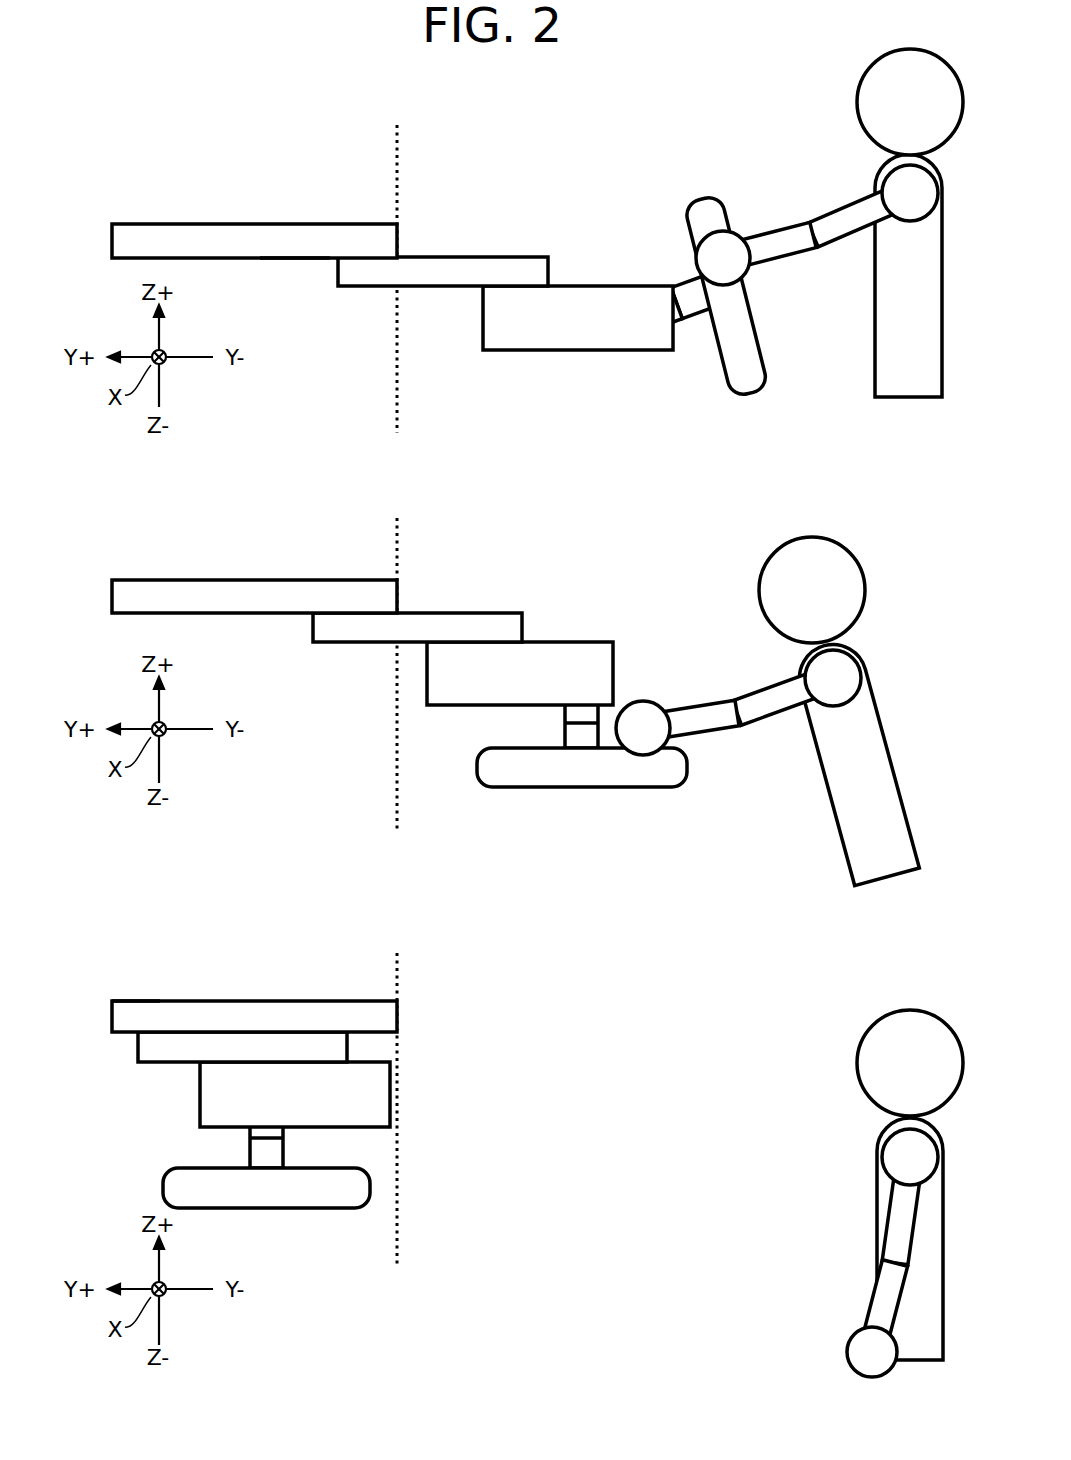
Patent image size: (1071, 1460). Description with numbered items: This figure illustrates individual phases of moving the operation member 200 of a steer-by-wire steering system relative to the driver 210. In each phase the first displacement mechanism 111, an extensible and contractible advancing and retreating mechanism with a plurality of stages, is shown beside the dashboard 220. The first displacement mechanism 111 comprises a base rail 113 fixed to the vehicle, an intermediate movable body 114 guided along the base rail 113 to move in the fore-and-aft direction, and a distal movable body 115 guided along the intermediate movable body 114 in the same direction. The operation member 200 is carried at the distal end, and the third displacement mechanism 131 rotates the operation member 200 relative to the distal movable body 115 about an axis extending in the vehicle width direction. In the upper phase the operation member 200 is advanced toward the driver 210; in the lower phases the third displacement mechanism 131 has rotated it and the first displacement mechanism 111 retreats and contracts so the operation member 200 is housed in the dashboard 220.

The first displacement mechanism 111 is at (217, 223).
The base rail 113 is at (293, 259).
The intermediate movable body 114 is at (453, 270).
The distal movable body 115 is at (603, 285).
The third displacement mechanism 131 is at (637, 323).
The operation member 200 is at (703, 193).
The driver 210 is at (857, 94).
The dashboard 220 is at (393, 197).